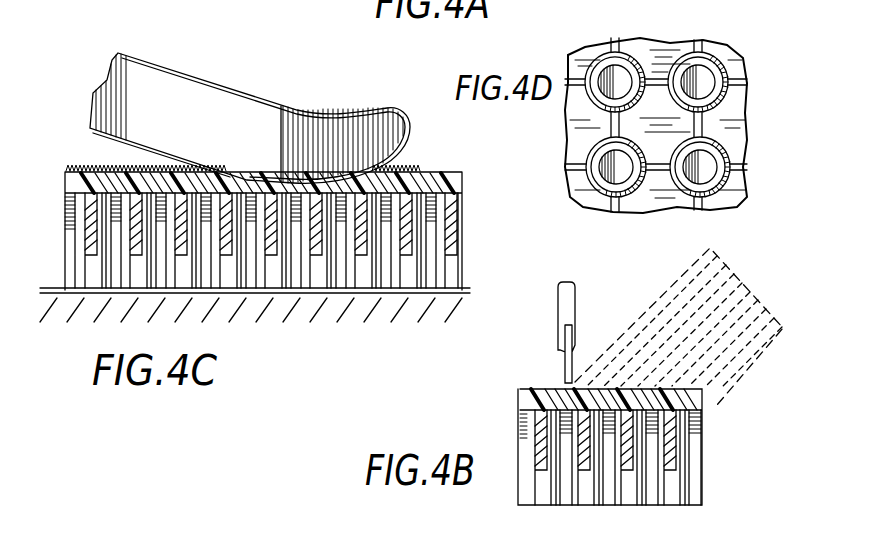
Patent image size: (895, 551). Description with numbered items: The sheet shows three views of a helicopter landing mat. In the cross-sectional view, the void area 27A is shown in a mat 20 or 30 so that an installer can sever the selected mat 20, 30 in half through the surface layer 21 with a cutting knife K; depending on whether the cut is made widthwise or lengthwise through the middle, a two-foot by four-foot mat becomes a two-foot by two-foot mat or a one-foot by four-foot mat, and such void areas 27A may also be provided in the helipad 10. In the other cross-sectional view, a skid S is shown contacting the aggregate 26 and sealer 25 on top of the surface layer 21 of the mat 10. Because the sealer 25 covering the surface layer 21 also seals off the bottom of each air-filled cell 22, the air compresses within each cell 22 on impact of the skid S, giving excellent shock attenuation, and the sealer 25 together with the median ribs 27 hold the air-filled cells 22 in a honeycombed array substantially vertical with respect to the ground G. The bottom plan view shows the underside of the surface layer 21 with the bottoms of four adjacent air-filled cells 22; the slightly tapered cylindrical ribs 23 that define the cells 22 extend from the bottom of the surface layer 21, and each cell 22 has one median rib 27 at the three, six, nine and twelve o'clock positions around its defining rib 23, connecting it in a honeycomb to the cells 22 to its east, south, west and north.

In FIG. 4C, the helipad 10 is at (479, 236).
In FIG. 4B, the mat 20 is at (714, 462).
In FIG. 4C, the surface layer 21 is at (78, 183).
In FIG. 4D, the surface layer 21 is at (737, 102).
In FIG. 4B, the surface layer 21 is at (535, 407).
In FIG. 4C, the air-filled cell 22 is at (290, 245).
In FIG. 4D, the air-filled cell 22 is at (710, 172).
In FIG. 4D, the cylindrical rib 23 is at (712, 63).
In FIG. 4C, the sealer 25 is at (65, 169).
In FIG. 4C, the aggregate 26 is at (105, 162).
In FIG. 4C, the median rib 27 is at (88, 210).
In FIG. 4D, the median rib 27 is at (737, 155).
In FIG. 4B, the median rib 27 is at (652, 473).
In FIG. 4B, the void area 27A is at (566, 487).
In FIG. 4D, the mat 30 is at (656, 107).
In FIG. 4B, the mat 30 is at (651, 376).
In FIG. 4C, the skid S is at (327, 137).
In FIG. 4B, the cutting knife K is at (567, 305).
In FIG. 4C, the ground G is at (60, 297).